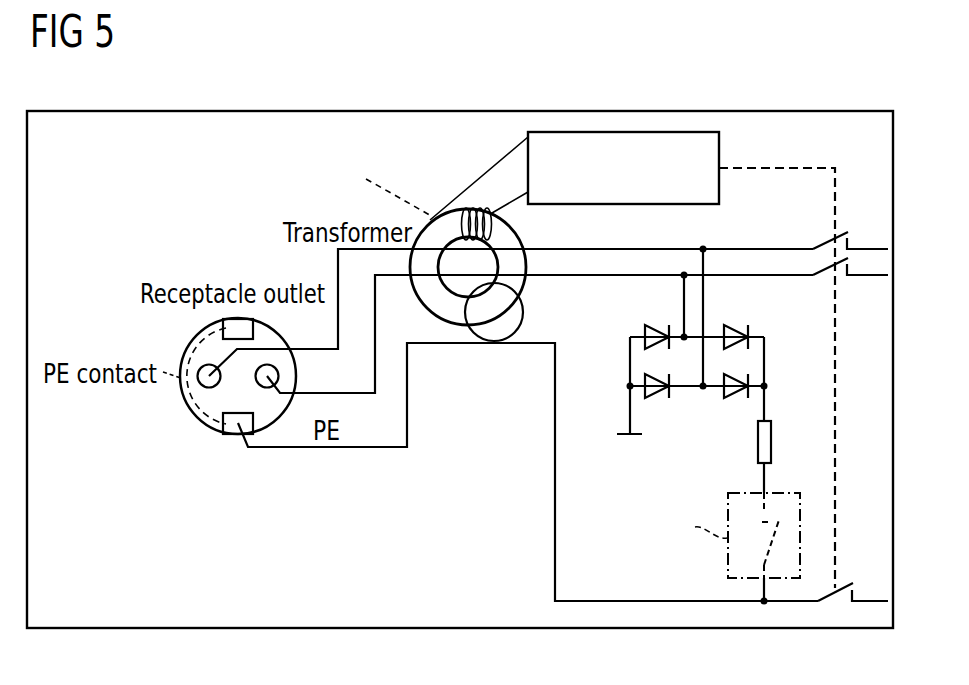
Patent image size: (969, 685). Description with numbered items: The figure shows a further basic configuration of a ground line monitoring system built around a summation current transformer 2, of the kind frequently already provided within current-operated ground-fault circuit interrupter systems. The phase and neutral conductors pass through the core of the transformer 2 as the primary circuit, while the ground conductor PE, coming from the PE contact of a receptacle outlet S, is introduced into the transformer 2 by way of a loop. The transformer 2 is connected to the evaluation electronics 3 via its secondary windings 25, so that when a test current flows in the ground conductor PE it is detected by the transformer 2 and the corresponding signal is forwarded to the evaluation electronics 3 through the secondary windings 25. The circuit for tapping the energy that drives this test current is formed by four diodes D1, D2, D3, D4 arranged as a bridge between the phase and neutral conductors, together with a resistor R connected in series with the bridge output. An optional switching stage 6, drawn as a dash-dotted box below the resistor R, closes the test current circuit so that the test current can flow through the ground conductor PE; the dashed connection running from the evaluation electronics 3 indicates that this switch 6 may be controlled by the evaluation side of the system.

The secondary windings 25 is at (265, 162).
The summation current transformer 2 is at (527, 287).
The evaluation electronics 3 is at (719, 149).
The switch 6 is at (747, 493).
The diode D1 is at (645, 331).
The diode D2 is at (735, 324).
The diode D3 is at (645, 381).
The diode D4 is at (725, 395).
The resistor R is at (775, 442).
The receptacle outlet S is at (192, 412).